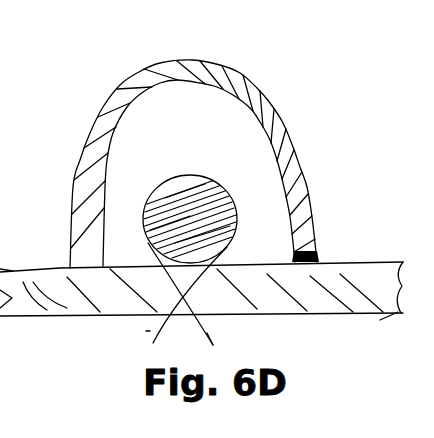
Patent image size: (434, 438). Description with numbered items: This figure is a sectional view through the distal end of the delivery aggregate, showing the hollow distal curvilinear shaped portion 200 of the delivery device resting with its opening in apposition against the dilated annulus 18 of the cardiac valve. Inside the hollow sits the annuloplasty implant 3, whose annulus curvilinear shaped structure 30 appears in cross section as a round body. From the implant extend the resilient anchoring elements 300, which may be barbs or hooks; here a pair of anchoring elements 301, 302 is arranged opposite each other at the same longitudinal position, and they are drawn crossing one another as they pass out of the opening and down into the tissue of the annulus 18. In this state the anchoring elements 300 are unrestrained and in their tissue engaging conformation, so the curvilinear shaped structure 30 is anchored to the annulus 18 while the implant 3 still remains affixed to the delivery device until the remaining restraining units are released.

The distal curvilinear shaped portion 200 is at (106, 101).
The annuloplasty implant 3 is at (229, 180).
The annulus curvilinear shaped structure 30 is at (185, 177).
The annulus 18 is at (350, 261).
The resilient anchoring elements 300 is at (148, 331).
The anchoring element 301 is at (208, 334).
The anchoring element 302 is at (152, 343).